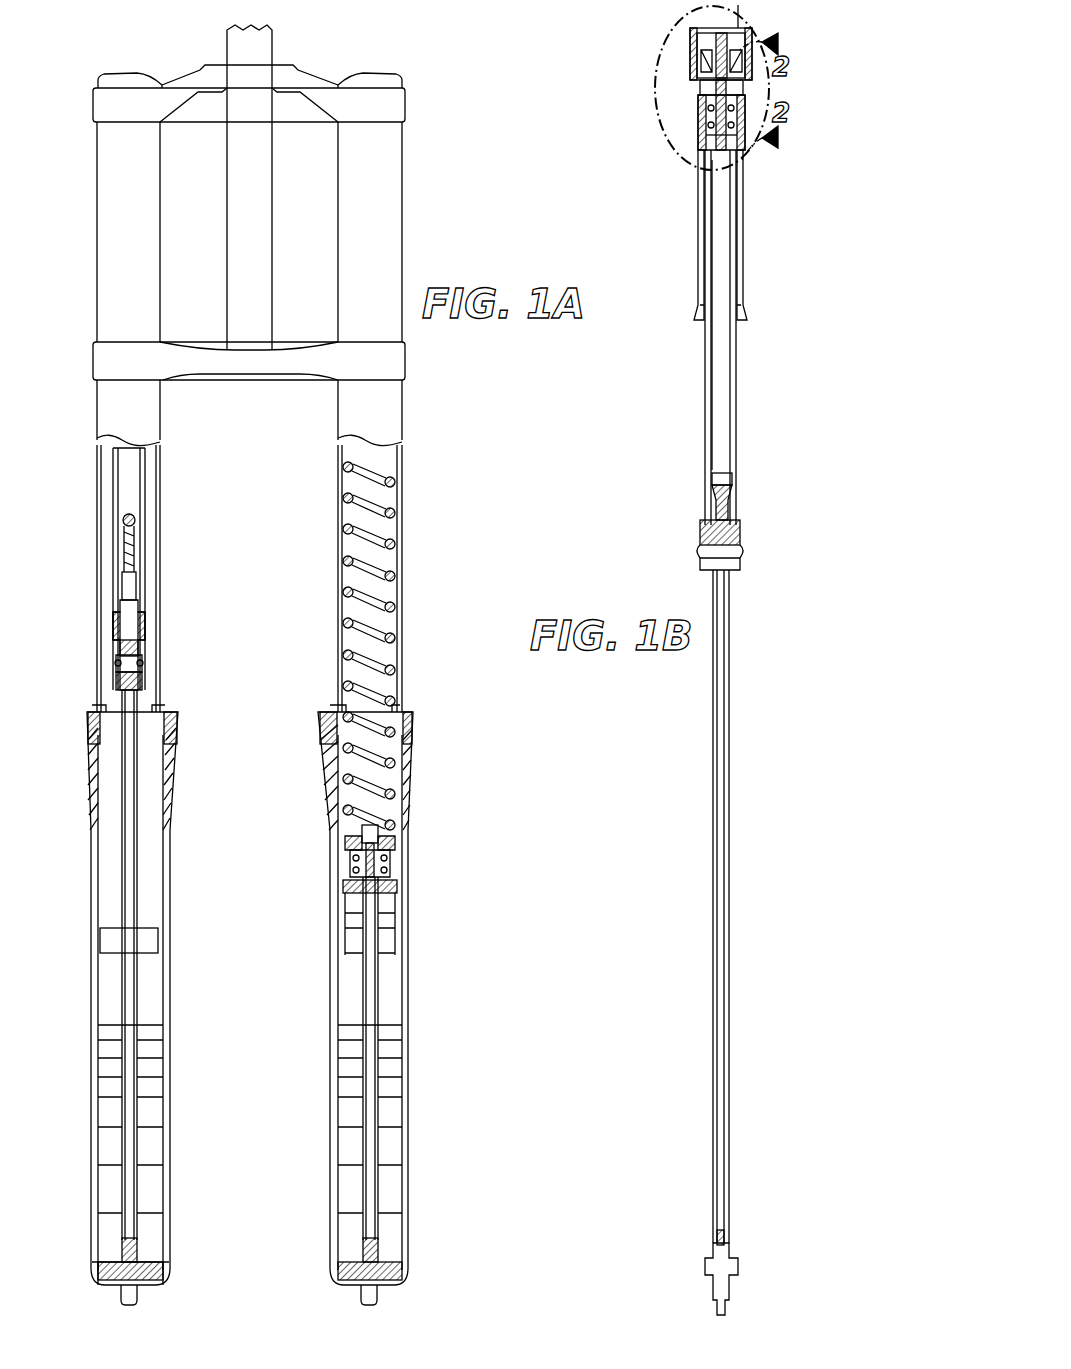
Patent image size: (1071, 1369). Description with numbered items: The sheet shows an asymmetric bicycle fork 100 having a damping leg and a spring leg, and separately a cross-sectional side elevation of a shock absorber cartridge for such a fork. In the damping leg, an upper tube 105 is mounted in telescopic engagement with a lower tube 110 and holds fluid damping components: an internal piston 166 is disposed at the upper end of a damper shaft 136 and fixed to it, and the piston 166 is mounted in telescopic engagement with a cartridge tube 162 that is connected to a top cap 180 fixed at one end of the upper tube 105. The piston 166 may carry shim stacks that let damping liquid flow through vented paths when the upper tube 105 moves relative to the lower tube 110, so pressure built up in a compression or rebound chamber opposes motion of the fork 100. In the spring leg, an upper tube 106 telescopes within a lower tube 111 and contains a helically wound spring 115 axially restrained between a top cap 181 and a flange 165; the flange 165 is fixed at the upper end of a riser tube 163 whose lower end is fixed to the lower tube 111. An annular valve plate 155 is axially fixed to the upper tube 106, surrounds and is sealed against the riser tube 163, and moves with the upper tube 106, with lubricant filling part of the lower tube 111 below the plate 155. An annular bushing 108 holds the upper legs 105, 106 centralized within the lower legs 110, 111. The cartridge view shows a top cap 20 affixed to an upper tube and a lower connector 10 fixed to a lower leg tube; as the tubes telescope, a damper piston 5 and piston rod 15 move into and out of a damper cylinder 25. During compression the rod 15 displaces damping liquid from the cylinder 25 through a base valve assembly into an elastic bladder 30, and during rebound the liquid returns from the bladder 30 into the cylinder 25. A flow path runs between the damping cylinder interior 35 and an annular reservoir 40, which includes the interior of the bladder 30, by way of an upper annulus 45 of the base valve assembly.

In FIG. 1A, the asymmetric bicycle fork 100 is at (478, 60).
In FIG. 1A, the top cap 180 is at (106, 75).
In FIG. 1A, the top cap 181 is at (394, 75).
In FIG. 1A, the upper tube 105 is at (100, 538).
In FIG. 1A, the upper tube 106 is at (400, 500).
In FIG. 1A, the cartridge tube 162 is at (112, 497).
In FIG. 1A, the internal piston 166 is at (112, 603).
In FIG. 1A, the damper shaft 136 is at (120, 860).
In FIG. 1A, the annular bushing 108 is at (92, 732).
In FIG. 1A, the lower tube 110 is at (88, 1040).
In FIG. 1A, the helically wound spring 115 is at (384, 540).
In FIG. 1A, the flange 165 is at (400, 850).
In FIG. 1A, the valve plate 155 is at (398, 890).
In FIG. 1A, the riser tube 163 is at (382, 1010).
In FIG. 1A, the lower tube 111 is at (410, 1055).
In FIG. 1B, the top cap 20 is at (692, 30).
In FIG. 1B, the upper annulus 45 is at (698, 100).
In FIG. 1B, the annular reservoir 40 is at (742, 170).
In FIG. 1B, the elastic bladder 30 is at (742, 235).
In FIG. 1B, the damper cylinder 25 is at (738, 370).
In FIG. 1B, the damping cylinder interior 35 is at (716, 428).
In FIG. 1B, the damper piston 5 is at (738, 483).
In FIG. 1B, the piston rod 15 is at (727, 722).
In FIG. 1B, the lower connector 10 is at (740, 1290).